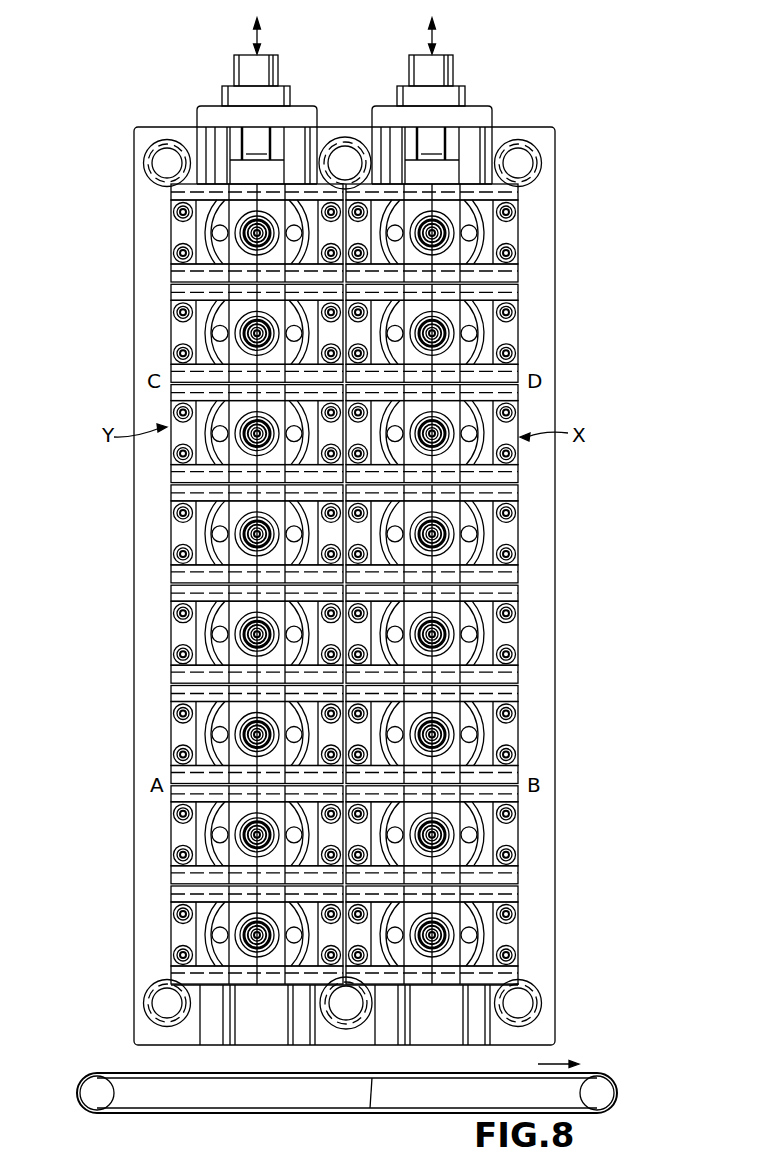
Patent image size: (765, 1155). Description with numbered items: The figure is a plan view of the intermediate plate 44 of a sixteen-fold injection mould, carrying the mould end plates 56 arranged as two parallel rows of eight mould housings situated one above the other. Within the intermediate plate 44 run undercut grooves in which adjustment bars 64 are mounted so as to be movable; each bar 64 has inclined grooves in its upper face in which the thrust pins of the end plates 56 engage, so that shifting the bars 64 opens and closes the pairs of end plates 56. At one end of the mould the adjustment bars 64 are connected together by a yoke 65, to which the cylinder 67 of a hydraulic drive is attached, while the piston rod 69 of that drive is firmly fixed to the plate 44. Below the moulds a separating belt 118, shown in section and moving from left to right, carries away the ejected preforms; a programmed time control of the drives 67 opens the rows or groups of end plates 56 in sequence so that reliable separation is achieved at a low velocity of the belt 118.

The intermediate plate 44 is at (545, 403).
The mould end plate 56 is at (470, 244).
The adjustment bar 64 is at (205, 140).
The yoke 65 is at (292, 118).
The cylinder of hydraulic drive 67 is at (270, 70).
The piston rod 69 is at (343, 143).
The separating belt 118 is at (371, 1100).